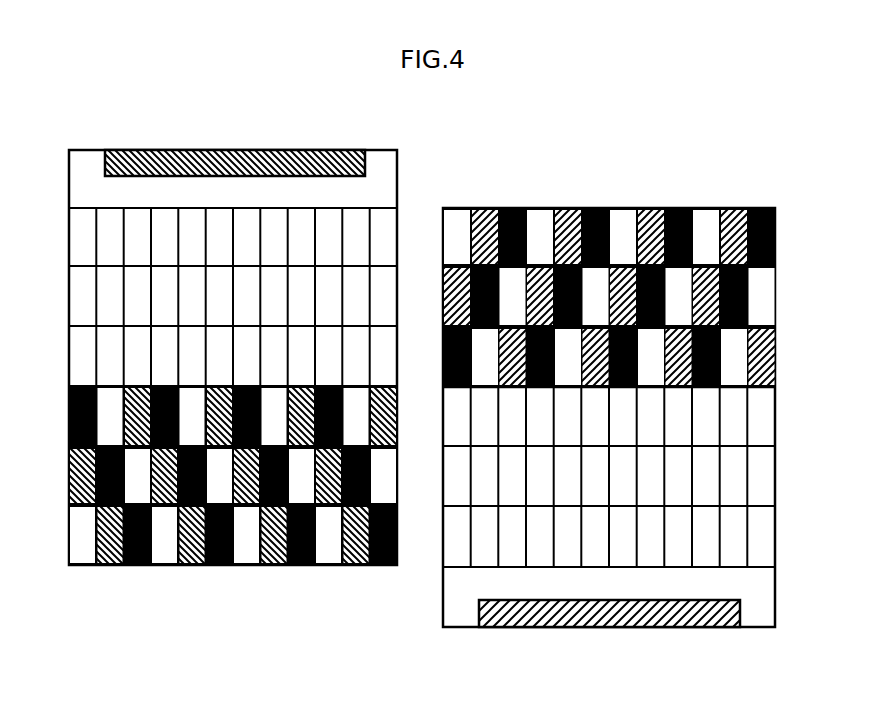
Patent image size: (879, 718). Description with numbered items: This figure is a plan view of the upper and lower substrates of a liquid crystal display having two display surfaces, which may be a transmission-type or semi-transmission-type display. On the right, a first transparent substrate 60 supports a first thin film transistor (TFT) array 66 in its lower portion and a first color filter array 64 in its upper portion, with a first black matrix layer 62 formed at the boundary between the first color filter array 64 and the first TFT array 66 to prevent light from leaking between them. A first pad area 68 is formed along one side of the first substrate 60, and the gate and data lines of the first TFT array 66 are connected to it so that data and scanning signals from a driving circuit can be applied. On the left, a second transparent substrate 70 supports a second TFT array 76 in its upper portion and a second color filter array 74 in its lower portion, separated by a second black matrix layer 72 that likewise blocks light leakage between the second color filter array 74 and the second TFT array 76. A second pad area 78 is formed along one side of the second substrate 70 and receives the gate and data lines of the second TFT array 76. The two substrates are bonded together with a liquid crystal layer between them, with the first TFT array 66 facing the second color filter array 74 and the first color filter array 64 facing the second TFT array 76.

The first transparent substrate 60 is at (643, 405).
The first black matrix layer 62 is at (775, 388).
The first color filter array 64 is at (775, 300).
The first thin film transistor array 66 is at (775, 535).
The first pad area 68 is at (553, 627).
The second transparent substrate 70 is at (204, 368).
The second black matrix layer 72 is at (69, 385).
The second color filter array 74 is at (69, 578).
The second thin film transistor array 76 is at (69, 292).
The second pad area 78 is at (321, 150).